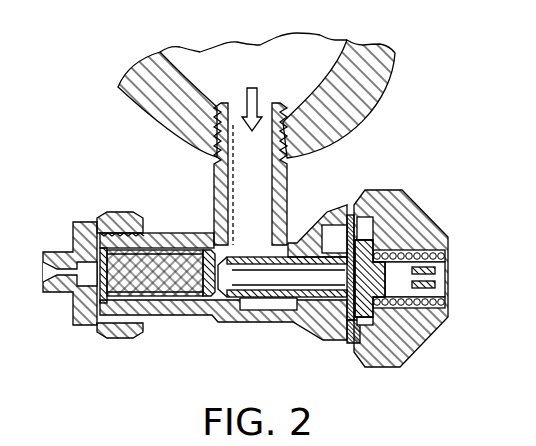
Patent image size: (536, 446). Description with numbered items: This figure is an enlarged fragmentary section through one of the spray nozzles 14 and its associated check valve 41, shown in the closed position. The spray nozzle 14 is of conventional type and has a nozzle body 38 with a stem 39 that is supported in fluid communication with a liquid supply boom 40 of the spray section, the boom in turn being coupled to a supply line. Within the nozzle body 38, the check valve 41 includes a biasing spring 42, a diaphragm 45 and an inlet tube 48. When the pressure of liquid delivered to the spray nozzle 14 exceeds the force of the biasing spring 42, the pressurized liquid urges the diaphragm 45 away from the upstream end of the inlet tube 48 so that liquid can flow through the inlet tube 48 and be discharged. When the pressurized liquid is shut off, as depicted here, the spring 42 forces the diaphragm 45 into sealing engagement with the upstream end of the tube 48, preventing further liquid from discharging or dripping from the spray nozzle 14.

The spray nozzle 14 is at (86, 213).
The nozzle body 38 is at (237, 314).
The stem 39 is at (286, 181).
The liquid supply boom 40 is at (372, 91).
The check valve 41 is at (377, 248).
The biasing spring 42 is at (410, 306).
The diaphragm 45 is at (347, 311).
The inlet tube 48 is at (269, 298).